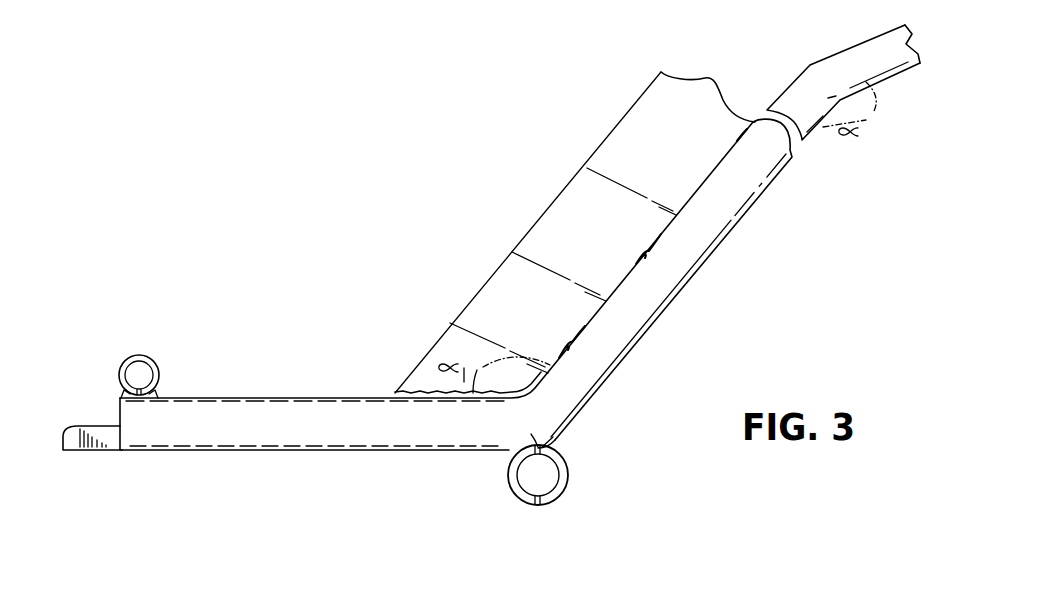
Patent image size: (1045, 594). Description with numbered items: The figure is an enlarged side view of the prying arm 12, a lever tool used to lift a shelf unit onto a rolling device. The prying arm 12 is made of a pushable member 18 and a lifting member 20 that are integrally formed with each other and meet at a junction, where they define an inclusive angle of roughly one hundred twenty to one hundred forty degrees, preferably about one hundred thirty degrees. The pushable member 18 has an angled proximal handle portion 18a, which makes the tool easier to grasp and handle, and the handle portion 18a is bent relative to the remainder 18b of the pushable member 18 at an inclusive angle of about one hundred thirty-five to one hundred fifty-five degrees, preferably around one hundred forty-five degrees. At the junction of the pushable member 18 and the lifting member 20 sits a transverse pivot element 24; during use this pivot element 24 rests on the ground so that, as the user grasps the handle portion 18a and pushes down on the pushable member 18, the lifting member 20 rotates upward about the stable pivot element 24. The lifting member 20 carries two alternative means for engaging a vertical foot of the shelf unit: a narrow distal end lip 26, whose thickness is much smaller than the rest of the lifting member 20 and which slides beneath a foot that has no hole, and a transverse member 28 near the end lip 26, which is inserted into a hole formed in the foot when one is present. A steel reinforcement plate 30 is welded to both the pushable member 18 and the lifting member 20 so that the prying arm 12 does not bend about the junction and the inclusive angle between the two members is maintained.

The prying arm 12 is at (427, 245).
The pushable member 18 is at (700, 56).
The angled proximal handle portion 18a is at (852, 48).
The remainder of the pushable member 18b is at (700, 268).
The lifting member 20 is at (321, 350).
The transverse pivot element 24 is at (567, 470).
The narrow distal end lip 26 is at (98, 425).
The transverse member 28 is at (157, 363).
The steel reinforcement plate 30 is at (505, 258).